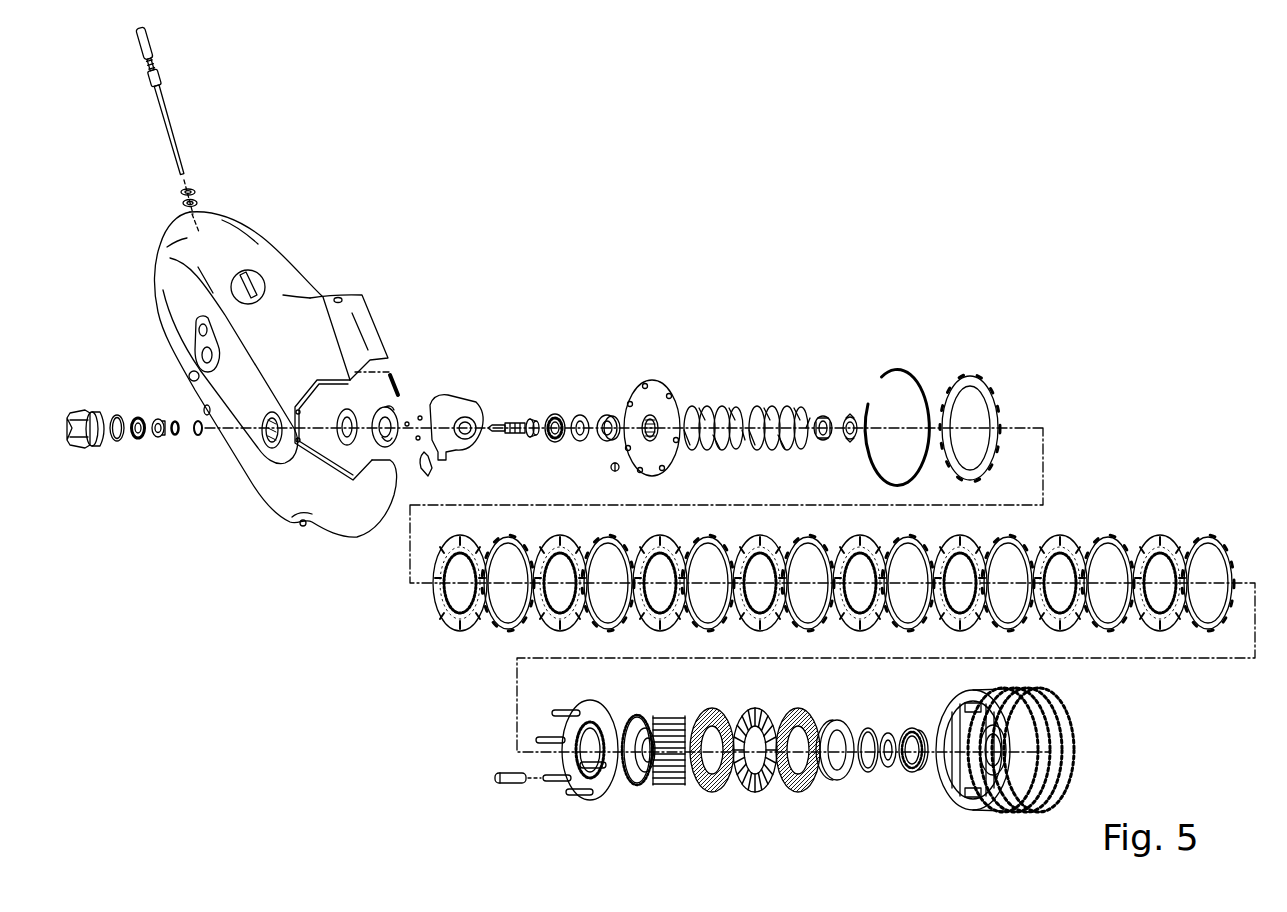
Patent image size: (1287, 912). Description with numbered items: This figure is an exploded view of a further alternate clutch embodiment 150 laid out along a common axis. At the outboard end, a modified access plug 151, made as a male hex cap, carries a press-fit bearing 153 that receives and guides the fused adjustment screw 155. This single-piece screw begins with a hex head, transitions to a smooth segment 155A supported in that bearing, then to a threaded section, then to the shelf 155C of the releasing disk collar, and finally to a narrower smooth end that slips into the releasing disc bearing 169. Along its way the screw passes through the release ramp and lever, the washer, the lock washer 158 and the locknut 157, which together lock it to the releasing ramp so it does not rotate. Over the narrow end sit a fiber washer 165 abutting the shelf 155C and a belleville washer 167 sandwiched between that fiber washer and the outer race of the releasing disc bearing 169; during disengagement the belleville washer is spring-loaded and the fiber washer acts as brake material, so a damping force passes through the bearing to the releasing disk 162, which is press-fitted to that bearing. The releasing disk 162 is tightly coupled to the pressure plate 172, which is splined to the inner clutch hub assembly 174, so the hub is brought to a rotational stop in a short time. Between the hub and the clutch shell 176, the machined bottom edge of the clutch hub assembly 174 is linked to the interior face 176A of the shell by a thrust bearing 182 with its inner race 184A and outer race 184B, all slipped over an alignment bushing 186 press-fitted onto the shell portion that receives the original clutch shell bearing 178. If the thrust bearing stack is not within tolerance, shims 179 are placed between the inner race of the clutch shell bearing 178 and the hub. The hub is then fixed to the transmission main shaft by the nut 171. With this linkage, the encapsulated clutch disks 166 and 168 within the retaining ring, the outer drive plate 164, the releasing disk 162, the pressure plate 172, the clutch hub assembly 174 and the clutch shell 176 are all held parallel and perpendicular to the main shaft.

The embodiment 150 is at (547, 282).
The access plug 151 is at (85, 410).
The bearing 153 is at (136, 418).
The adjustment screw 155 is at (524, 400).
The smooth segment 155A is at (503, 424).
The shelf 155C is at (528, 436).
The locknut 157 is at (159, 440).
The lock washer 158 is at (174, 421).
The releasing disk 162 is at (660, 381).
The outer drive plate 164 is at (972, 376).
The fiber washer 165 is at (554, 443).
The belleville washer 167 is at (583, 414).
The releasing disc bearing 169 is at (607, 442).
The nut 171 is at (828, 416).
The clutch disk 166 is at (455, 626).
The clutch disk 168 is at (503, 632).
The pressure plate 172 is at (592, 702).
The clutch hub assembly 174 is at (658, 715).
The clutch shell 176 is at (1054, 699).
The interior face 176A is at (964, 784).
The clutch shell bearing 178 is at (915, 770).
The shims 179 is at (890, 735).
The thrust bearing 182 is at (760, 710).
The inner race 184A is at (803, 710).
The outer race 184B is at (714, 710).
The alignment bushing 186 is at (840, 722).